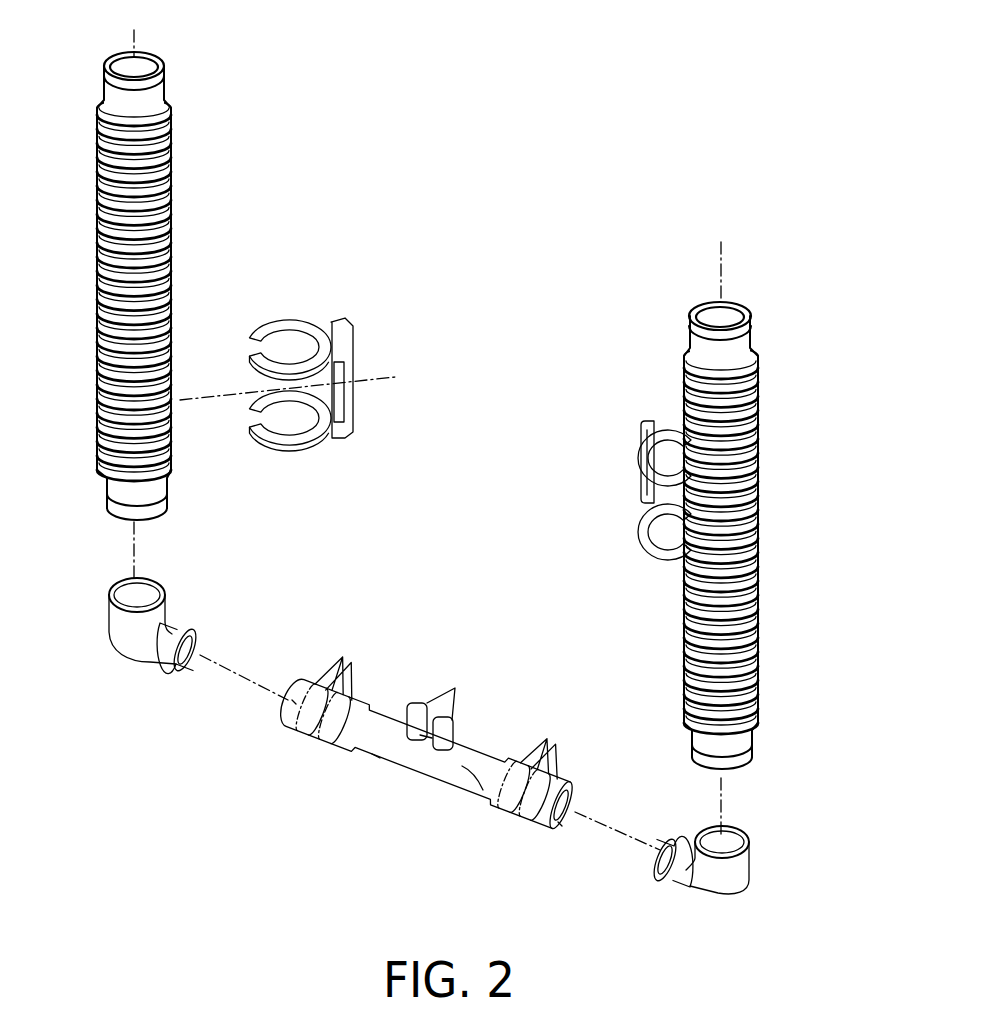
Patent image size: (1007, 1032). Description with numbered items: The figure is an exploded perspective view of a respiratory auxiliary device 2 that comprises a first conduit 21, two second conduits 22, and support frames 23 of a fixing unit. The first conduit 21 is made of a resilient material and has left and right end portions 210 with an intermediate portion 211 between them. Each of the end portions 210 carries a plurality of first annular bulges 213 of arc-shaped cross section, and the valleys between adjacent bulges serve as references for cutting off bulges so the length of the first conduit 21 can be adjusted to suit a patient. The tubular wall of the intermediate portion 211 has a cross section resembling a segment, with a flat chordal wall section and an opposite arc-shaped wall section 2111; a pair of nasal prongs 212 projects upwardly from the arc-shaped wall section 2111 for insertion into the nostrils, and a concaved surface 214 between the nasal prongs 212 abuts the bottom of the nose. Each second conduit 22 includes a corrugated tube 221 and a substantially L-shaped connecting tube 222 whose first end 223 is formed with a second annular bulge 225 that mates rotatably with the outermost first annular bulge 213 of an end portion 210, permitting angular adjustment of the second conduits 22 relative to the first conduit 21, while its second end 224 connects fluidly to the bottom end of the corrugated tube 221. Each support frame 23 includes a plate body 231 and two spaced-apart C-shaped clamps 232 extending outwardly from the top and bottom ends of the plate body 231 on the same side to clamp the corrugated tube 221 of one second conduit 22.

The respiratory auxiliary device 2 is at (292, 797).
The first conduit 21 is at (410, 760).
The left and right end portions 210 is at (290, 703).
The intermediate portion 211 is at (365, 752).
The nasal prongs 212 is at (427, 703).
The first annular bulges 213 is at (343, 662).
The concaved surface 214 is at (427, 745).
The arc-shaped wall section 2111 is at (483, 795).
The second conduits 22 is at (182, 166).
The corrugated tube 221 is at (148, 222).
The connecting tube 222 is at (118, 630).
The first end 223 is at (203, 652).
The second end 224 is at (150, 585).
The second annular bulge 225 is at (185, 630).
The support frames 23 is at (360, 324).
The plate body 231 is at (352, 400).
The C-shaped clamps 232 is at (283, 318).